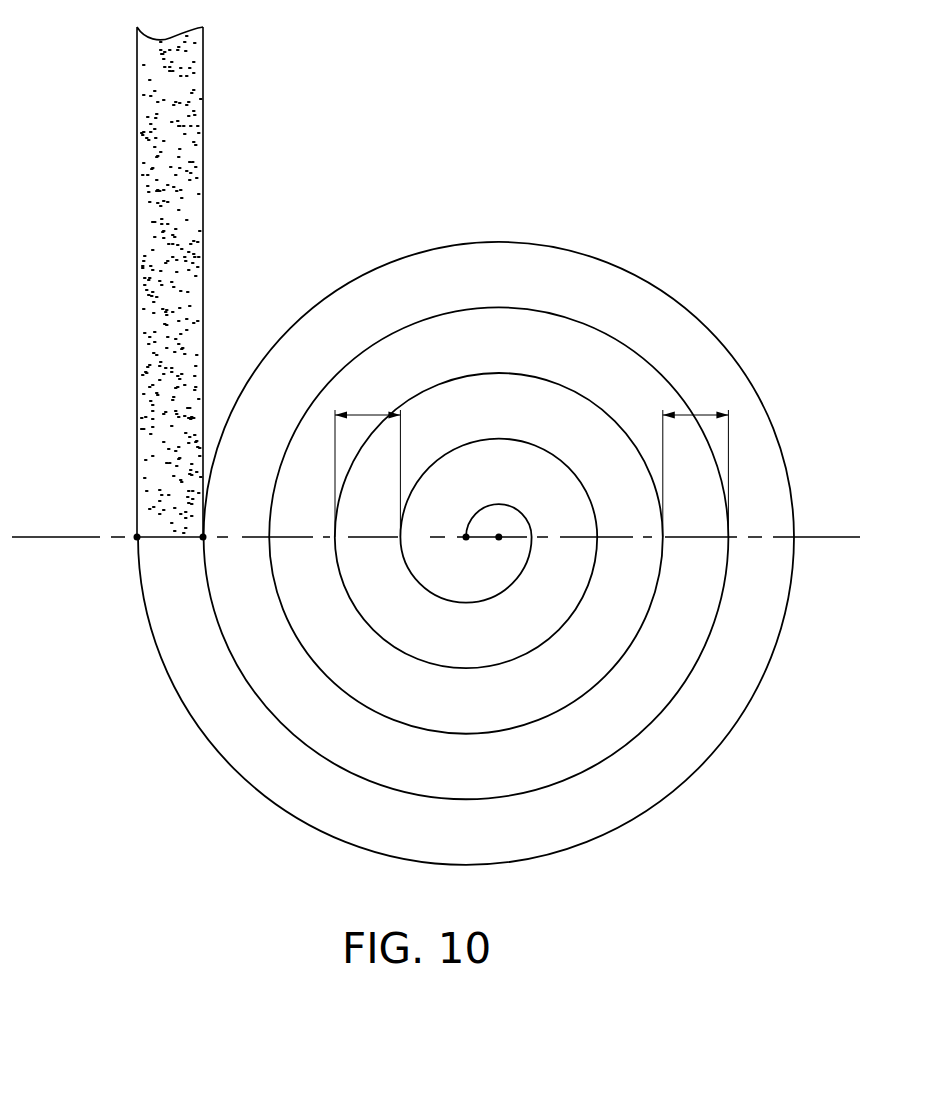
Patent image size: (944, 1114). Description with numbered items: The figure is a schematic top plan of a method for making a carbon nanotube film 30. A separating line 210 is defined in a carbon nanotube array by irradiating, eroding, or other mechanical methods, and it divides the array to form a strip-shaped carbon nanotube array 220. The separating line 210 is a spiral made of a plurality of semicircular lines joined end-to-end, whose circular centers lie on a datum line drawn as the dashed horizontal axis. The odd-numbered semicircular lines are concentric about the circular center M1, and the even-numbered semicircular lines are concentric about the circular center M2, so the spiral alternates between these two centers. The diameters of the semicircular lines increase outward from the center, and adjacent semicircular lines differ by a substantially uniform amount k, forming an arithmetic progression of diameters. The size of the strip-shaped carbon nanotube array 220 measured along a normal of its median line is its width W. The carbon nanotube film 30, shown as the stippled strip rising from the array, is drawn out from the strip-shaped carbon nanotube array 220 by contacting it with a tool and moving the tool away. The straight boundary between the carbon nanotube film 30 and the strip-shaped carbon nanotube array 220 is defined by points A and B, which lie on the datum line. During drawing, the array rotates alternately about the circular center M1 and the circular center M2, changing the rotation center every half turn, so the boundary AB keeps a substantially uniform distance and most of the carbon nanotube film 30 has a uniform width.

The carbon nanotube film 30 is at (180, 97).
The separating line 210 is at (652, 725).
The strip-shaped carbon nanotube array 220 is at (720, 683).
The circular center of odd-numbered semicircular lines M1 is at (499, 537).
The circular center of even-numbered semicircular lines M2 is at (466, 537).
The end point of boundary AB A is at (212, 548).
The end point of boundary AB B is at (127, 548).
The uniform difference between diameters of adjacent semicircular lines k is at (367, 463).
The width of the strip-shaped carbon nanotube array W is at (696, 463).